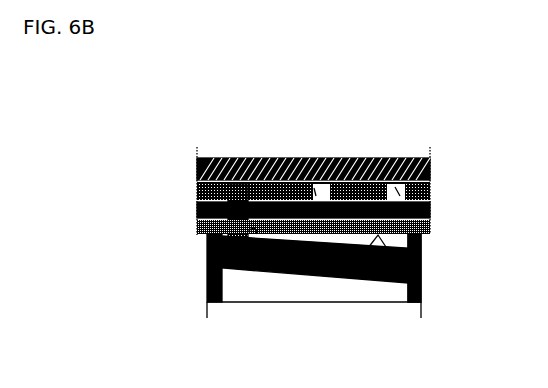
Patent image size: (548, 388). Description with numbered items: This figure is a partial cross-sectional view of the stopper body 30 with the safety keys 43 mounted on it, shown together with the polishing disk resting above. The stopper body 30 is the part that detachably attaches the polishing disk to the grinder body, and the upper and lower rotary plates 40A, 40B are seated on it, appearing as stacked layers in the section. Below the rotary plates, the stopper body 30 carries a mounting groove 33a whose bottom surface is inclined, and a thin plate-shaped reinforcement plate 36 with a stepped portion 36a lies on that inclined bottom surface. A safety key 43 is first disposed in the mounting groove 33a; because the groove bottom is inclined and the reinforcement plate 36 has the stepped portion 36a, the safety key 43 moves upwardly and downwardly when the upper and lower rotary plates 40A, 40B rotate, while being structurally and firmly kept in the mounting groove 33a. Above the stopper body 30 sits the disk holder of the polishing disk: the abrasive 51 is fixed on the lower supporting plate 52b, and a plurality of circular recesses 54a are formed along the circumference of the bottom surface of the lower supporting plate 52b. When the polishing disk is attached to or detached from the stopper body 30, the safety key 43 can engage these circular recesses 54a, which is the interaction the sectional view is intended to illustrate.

The stopper body 30 is at (190, 279).
The mounting groove 33a is at (422, 238).
The reinforcement plate 36 is at (333, 245).
The stepped portion 36a is at (372, 250).
The upper rotary plate 40A is at (430, 203).
The lower rotary plate 40B is at (432, 224).
The safety key 43 is at (252, 232).
The abrasive 51 is at (257, 158).
The lower supporting plate 52b is at (198, 195).
The circular recess 54a is at (302, 158).